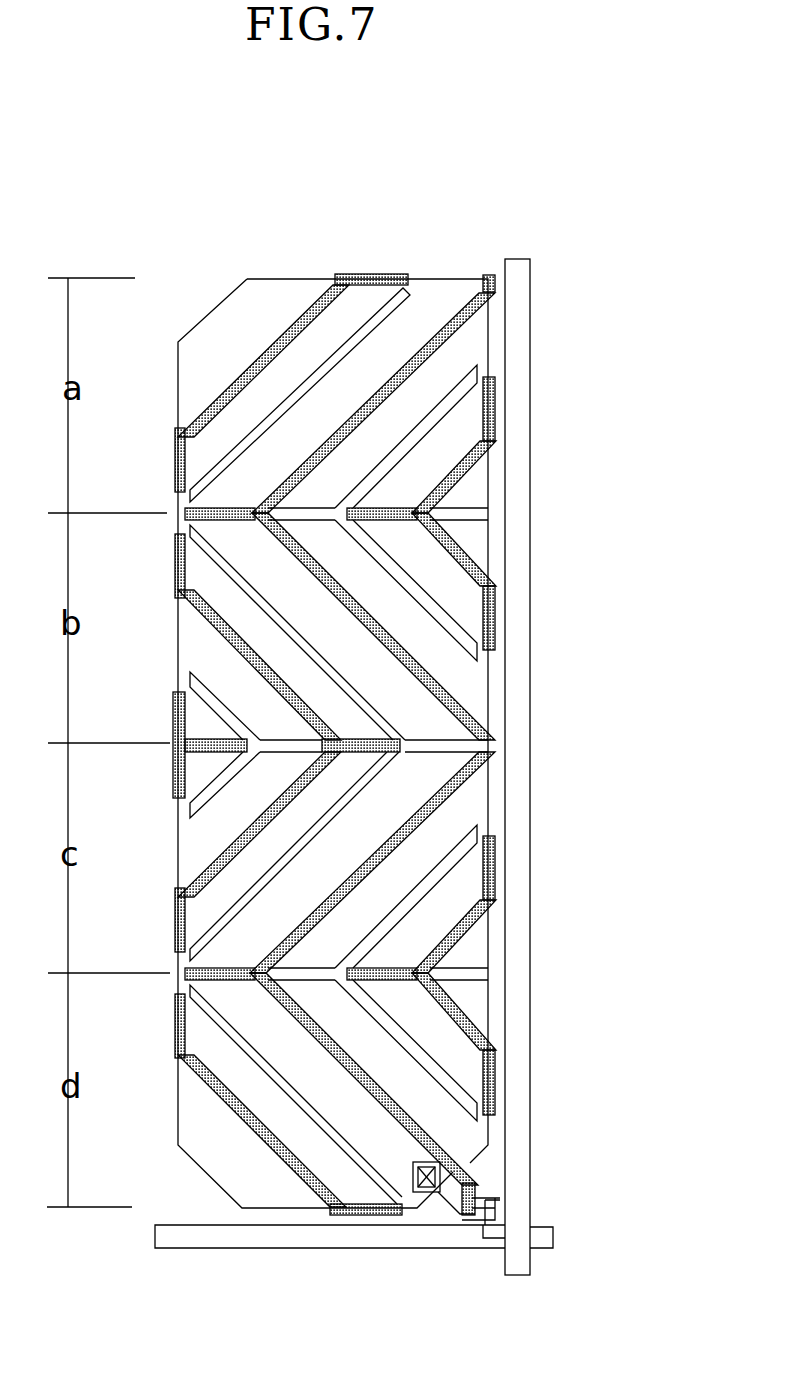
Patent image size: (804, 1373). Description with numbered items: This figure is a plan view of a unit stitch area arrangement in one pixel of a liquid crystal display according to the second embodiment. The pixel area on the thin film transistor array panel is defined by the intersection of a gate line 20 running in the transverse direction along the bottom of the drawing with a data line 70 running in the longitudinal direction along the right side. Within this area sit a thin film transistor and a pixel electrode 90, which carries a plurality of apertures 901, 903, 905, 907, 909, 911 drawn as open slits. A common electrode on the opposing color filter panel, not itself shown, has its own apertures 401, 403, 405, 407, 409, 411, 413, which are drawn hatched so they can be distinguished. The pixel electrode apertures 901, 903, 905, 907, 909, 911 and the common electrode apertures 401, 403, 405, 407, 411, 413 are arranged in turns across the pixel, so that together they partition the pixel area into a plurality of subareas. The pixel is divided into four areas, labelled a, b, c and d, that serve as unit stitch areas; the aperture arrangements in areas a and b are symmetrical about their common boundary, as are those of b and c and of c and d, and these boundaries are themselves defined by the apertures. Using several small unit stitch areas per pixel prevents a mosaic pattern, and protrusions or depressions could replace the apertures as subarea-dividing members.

The gate line 20 is at (312, 1237).
The data line 70 is at (513, 1052).
The pixel electrode 90 is at (218, 307).
The aperture of the common electrode 401 is at (298, 297).
The aperture of the common electrode 403 is at (480, 310).
The aperture of the common electrode 405 is at (482, 455).
The aperture of the common electrode 407 is at (192, 615).
The aperture of the common electrode 409 is at (176, 765).
The aperture of the common electrode 411 is at (482, 912).
The aperture of the common electrode 413 is at (200, 1083).
The aperture of the pixel electrode 901 is at (237, 440).
The aperture of the pixel electrode 903 is at (455, 403).
The aperture of the pixel electrode 905 is at (215, 562).
The aperture of the pixel electrode 907 is at (198, 700).
The aperture of the pixel electrode 909 is at (465, 868).
The aperture of the pixel electrode 911 is at (197, 1020).